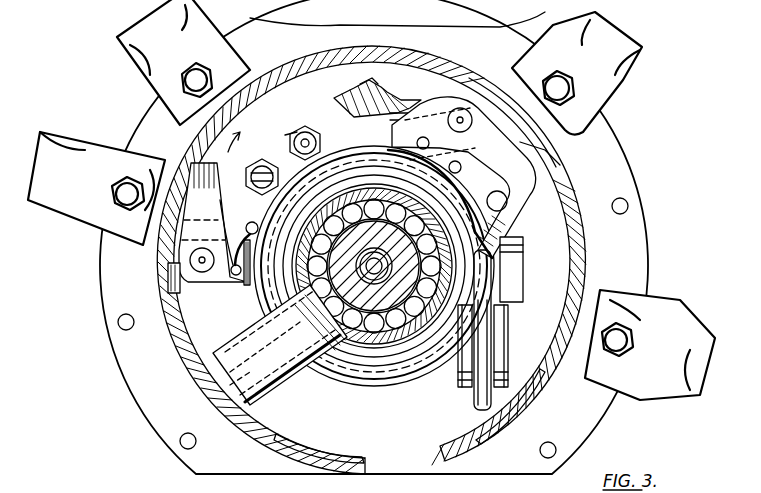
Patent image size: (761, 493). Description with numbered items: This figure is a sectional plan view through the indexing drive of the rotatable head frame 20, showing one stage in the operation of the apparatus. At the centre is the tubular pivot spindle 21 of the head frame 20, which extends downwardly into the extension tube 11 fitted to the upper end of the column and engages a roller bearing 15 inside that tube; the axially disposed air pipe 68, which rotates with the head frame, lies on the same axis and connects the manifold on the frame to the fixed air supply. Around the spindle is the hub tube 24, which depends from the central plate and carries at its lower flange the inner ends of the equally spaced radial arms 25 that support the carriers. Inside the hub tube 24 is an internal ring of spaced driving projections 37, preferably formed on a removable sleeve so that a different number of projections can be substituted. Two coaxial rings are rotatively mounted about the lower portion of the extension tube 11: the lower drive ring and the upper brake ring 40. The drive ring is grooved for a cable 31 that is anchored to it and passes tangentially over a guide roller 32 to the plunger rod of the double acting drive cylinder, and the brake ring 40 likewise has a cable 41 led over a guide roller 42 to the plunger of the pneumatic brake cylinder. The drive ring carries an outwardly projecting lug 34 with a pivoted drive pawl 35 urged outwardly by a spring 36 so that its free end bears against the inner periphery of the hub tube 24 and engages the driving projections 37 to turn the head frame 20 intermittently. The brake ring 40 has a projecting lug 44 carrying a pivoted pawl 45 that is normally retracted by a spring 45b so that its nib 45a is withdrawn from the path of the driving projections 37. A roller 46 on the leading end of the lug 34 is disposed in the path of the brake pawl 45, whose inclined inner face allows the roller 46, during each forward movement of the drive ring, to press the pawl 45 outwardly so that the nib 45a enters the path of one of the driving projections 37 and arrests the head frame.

The extension tube 11 is at (353, 338).
The roller bearing 15 is at (374, 328).
The head frame 20 is at (685, 126).
The tubular pivot spindle 21 is at (390, 297).
The hub tube 24 is at (576, 180).
The radial arms 25 is at (150, 80).
The cable 31 is at (285, 135).
The guide roller 32 is at (490, 332).
The lug 34 is at (248, 237).
The drive pawl 35 is at (196, 227).
The spring 36 is at (224, 283).
The driving projections 37 is at (452, 78).
The brake ring 40 is at (360, 165).
The cable 41 is at (474, 197).
The guide roller 42 is at (210, 380).
The lug 44 is at (523, 200).
The pawl 45 is at (395, 88).
The nib 45a is at (370, 86).
The spring 45b is at (541, 158).
The roller 46 is at (306, 133).
The axially disposed pipe 68 is at (374, 266).